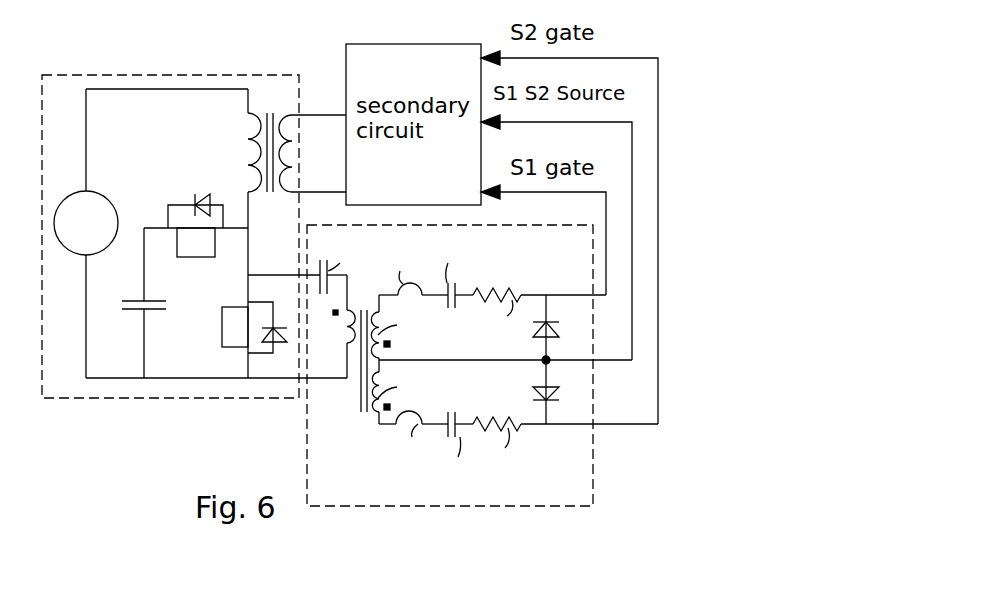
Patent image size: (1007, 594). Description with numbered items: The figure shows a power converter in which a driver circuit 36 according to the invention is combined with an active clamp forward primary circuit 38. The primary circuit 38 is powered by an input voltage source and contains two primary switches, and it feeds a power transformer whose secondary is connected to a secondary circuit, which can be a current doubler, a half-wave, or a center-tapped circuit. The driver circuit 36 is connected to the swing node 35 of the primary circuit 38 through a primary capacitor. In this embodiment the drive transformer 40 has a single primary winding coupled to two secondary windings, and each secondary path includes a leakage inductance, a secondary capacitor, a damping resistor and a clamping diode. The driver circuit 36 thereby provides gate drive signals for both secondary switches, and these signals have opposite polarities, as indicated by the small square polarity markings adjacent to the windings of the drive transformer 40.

The swing node 35 is at (246, 264).
The driver circuit 36 is at (482, 392).
The active clamp forward primary circuit 38 is at (210, 398).
The drive transformer 40 is at (359, 400).